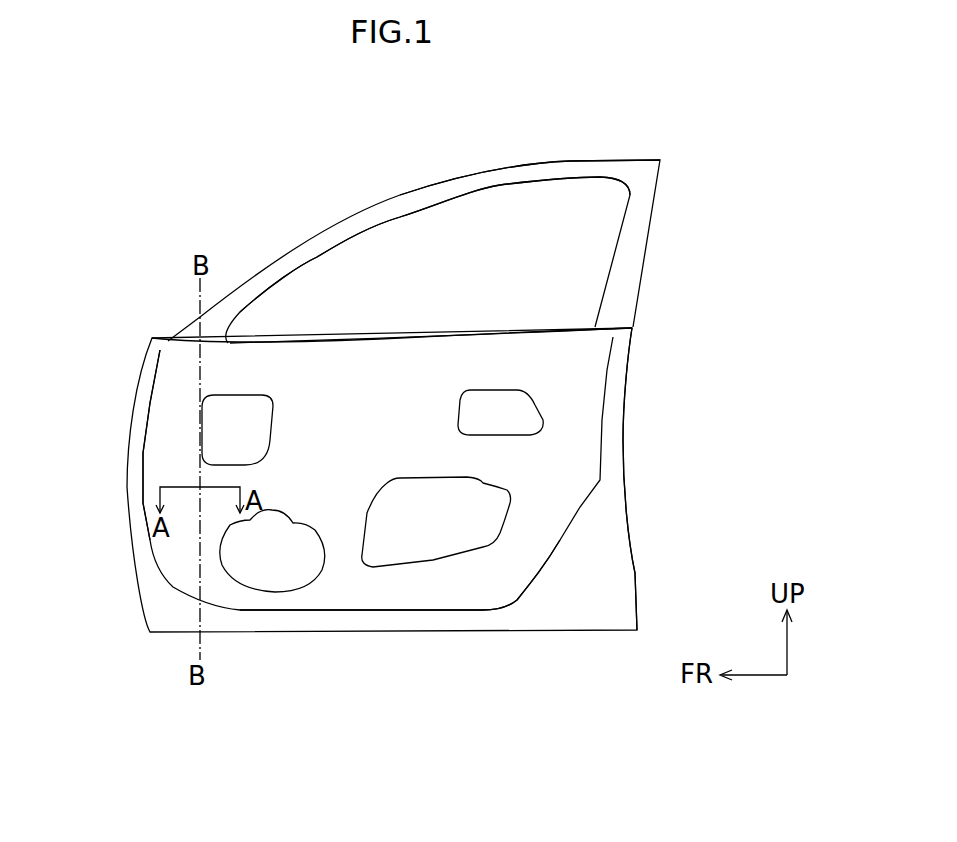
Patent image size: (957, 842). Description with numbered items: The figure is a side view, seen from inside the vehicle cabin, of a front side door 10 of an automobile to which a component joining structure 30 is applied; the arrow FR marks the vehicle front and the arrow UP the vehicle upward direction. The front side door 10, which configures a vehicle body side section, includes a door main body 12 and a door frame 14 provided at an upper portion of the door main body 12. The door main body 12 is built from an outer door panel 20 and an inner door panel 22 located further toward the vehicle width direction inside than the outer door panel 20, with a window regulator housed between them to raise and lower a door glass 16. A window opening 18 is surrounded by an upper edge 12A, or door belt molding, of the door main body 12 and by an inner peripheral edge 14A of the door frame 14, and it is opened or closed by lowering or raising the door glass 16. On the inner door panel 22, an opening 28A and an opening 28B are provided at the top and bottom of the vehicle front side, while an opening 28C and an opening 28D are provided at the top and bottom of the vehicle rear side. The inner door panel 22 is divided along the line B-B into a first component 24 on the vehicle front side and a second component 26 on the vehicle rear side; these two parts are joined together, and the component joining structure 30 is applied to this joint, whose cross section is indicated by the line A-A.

The front side door 10 is at (403, 165).
The door main body 12 is at (713, 341).
The upper edge of the door main body 12A is at (457, 353).
The door frame 14 is at (498, 177).
The inner peripheral edge of the door frame 14A is at (517, 183).
The door glass 16 is at (330, 278).
The window opening 18 is at (473, 271).
The outer door panel 20 is at (583, 382).
The inner door panel 22 is at (578, 427).
The first component 24 is at (158, 435).
The second component 26 is at (333, 442).
The opening 28A is at (258, 437).
The opening 28B is at (300, 562).
The opening 28C is at (525, 425).
The opening 28D is at (460, 521).
The component joining structure 30 is at (193, 470).